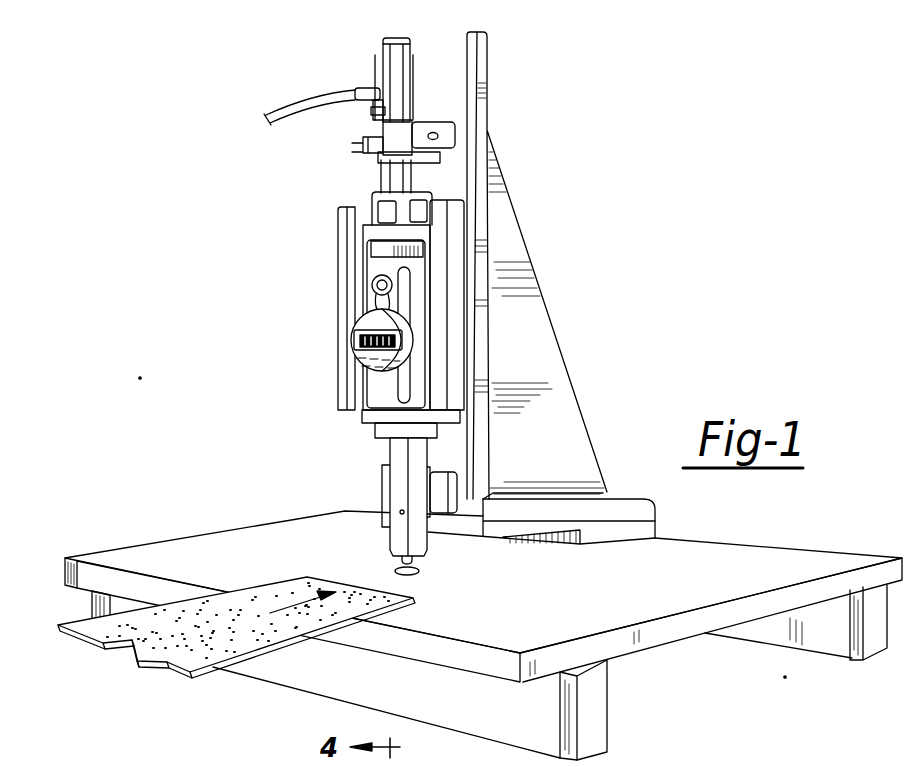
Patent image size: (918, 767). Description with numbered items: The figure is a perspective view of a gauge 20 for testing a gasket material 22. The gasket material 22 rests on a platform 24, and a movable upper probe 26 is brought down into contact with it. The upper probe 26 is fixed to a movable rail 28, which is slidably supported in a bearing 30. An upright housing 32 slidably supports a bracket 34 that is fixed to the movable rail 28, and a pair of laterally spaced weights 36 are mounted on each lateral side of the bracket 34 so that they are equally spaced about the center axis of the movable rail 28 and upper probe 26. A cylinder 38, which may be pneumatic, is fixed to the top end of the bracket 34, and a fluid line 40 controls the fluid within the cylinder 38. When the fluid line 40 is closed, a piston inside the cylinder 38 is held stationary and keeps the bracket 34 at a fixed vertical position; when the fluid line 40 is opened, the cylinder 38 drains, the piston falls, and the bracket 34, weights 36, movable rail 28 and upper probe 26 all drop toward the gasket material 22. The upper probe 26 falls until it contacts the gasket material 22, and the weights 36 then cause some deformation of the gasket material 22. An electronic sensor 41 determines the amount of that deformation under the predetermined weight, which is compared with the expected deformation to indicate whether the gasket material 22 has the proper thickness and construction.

The gauge 20 is at (271, 290).
The gasket material 22 is at (197, 613).
The platform 24 is at (225, 543).
The upper probe 26 is at (413, 562).
The movable rail 28 is at (393, 532).
The bearing 30 is at (420, 468).
The housing 32 is at (478, 202).
The bracket 34 is at (445, 412).
The weights 36 is at (343, 232).
The cylinder 38 is at (398, 72).
The fluid line 40 is at (298, 103).
The electronic sensor 41 is at (353, 342).